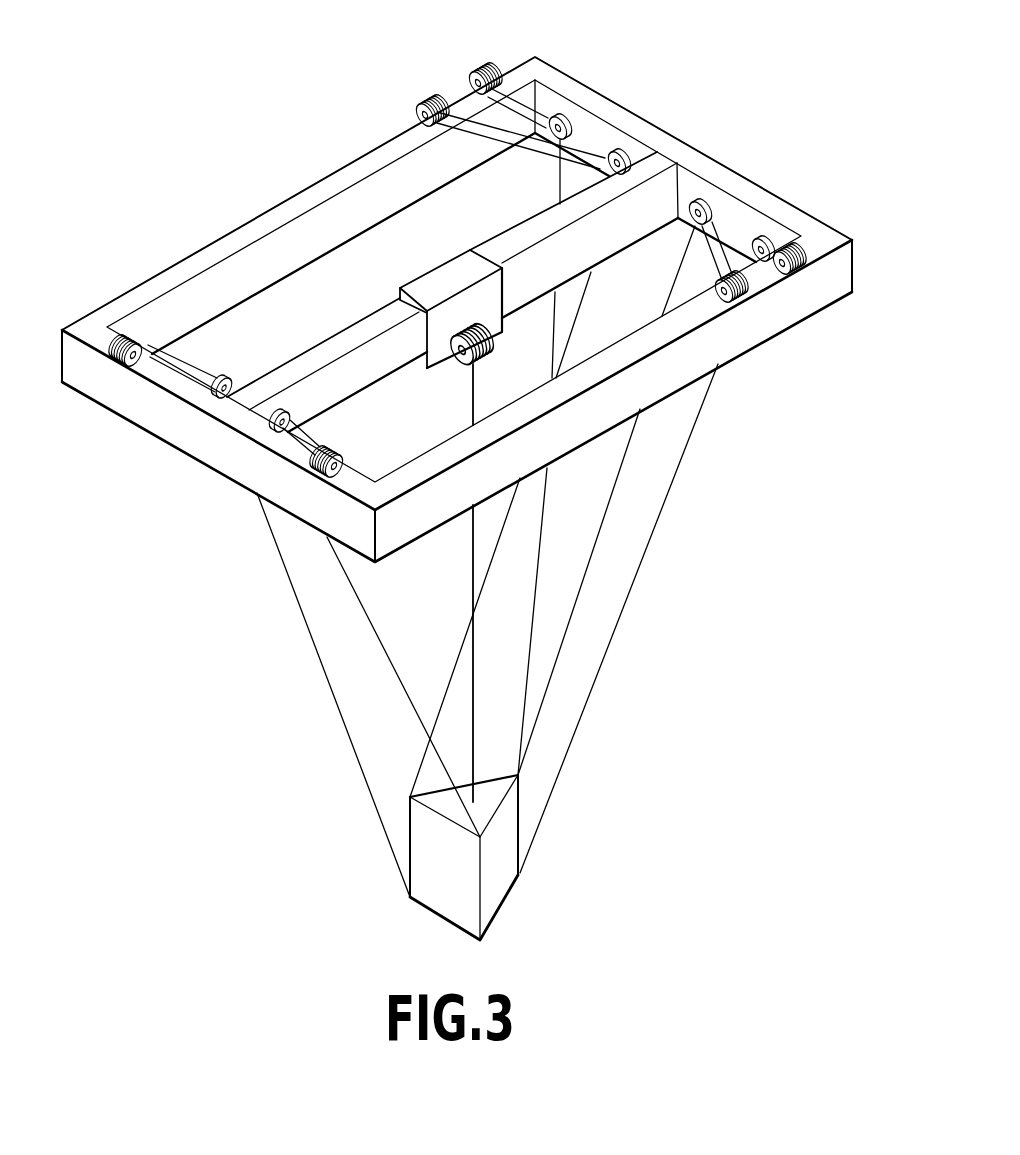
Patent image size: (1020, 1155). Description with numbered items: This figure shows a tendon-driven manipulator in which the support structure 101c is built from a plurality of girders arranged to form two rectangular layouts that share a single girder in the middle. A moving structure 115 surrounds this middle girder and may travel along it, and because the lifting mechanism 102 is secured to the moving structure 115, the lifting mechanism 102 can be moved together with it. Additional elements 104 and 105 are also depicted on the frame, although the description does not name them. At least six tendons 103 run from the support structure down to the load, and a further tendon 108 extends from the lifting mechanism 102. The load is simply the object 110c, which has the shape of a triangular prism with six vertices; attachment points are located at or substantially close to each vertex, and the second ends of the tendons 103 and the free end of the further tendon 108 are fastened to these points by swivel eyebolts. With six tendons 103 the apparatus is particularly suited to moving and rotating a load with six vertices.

The support structure 101c is at (243, 235).
The lifting mechanism 102 is at (450, 270).
The moving structure 115 is at (458, 328).
The tendons 103 is at (455, 672).
The winches 104 is at (474, 72).
The guide pulleys 105 is at (614, 150).
The further tendon 108 is at (476, 716).
The object 110c is at (440, 843).